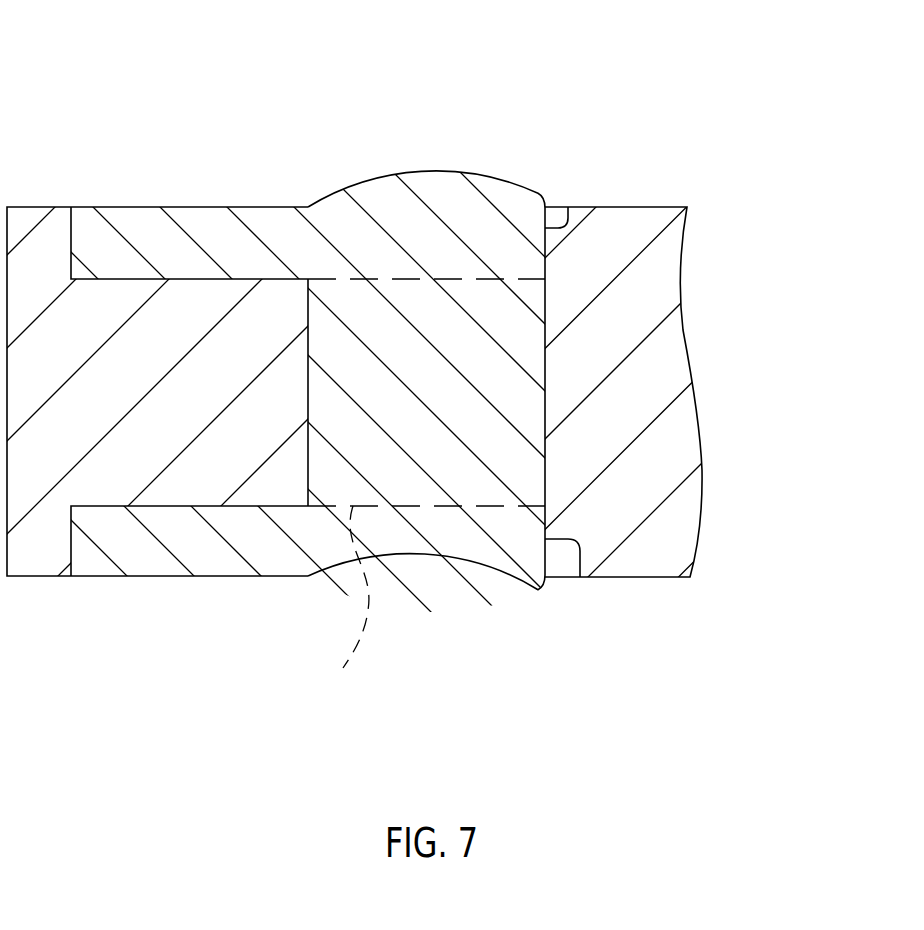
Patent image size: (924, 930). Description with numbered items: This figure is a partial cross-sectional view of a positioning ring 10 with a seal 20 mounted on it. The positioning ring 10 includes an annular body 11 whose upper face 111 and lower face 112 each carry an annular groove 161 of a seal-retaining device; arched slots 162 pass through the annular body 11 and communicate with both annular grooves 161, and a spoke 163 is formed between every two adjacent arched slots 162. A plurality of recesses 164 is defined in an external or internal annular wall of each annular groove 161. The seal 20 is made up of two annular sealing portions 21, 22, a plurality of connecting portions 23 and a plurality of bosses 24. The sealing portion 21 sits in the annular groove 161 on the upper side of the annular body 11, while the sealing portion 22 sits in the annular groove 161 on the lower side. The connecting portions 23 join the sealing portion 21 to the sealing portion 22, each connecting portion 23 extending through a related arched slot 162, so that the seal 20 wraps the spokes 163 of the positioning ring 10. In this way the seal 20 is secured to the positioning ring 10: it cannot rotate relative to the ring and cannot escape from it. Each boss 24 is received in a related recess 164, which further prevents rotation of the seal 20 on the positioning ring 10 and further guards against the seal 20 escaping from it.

The positioning ring 10 is at (57, 200).
The annular body 11 is at (648, 577).
The upper face 111 is at (617, 207).
The second surface 112 is at (612, 577).
The seal 20 is at (381, 172).
The sealing portion 21 is at (448, 193).
The sealing portion 22 is at (435, 583).
The connecting portion 23 is at (545, 412).
The boss 24 is at (180, 207).
The annular groove 161 is at (568, 207).
The arched slot 162 is at (726, 395).
The spoke 163 is at (346, 607).
The recess 164 is at (189, 395).